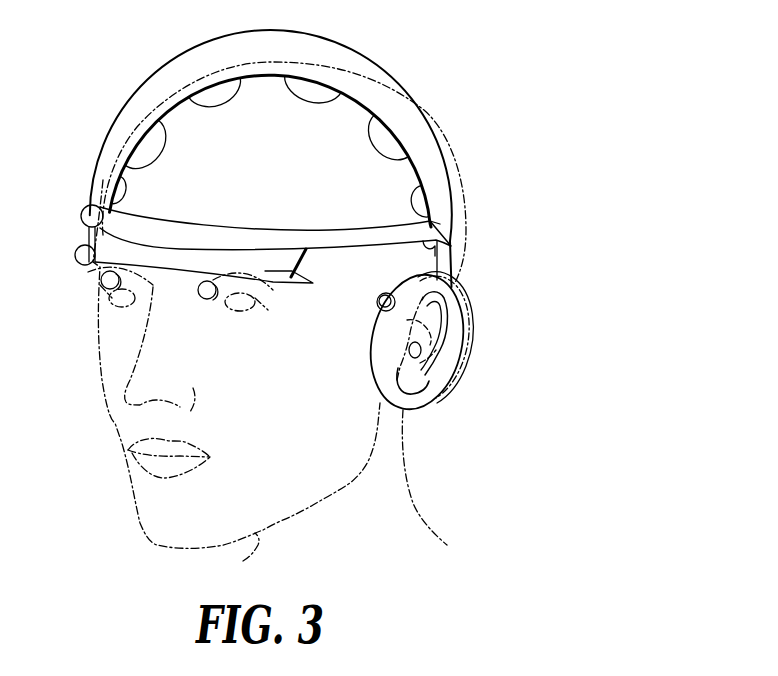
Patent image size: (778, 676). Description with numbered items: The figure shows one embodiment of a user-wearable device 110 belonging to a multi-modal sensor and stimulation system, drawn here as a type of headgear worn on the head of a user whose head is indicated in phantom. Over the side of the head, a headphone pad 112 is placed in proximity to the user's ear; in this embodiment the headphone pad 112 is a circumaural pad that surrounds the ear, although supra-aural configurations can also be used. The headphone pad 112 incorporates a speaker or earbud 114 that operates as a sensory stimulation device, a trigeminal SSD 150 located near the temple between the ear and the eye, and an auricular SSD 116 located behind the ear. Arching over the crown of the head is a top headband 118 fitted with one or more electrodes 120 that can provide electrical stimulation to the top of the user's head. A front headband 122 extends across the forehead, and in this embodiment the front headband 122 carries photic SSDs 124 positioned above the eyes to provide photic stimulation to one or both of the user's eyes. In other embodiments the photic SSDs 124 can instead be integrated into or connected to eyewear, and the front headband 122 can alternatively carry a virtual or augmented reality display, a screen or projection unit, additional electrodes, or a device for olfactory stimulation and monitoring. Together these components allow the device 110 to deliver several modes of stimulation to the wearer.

The user-wearable device 110 is at (441, 90).
The headphone pads 112 is at (460, 300).
The speakers or earbuds 114 is at (419, 353).
The auricular SSDs 116 is at (418, 387).
The top headband 118 is at (412, 151).
The electrodes 120 is at (420, 210).
The front headband 122 is at (141, 224).
The photic SSDs 124 is at (100, 279).
The trigeminal SSDs 150 is at (376, 300).